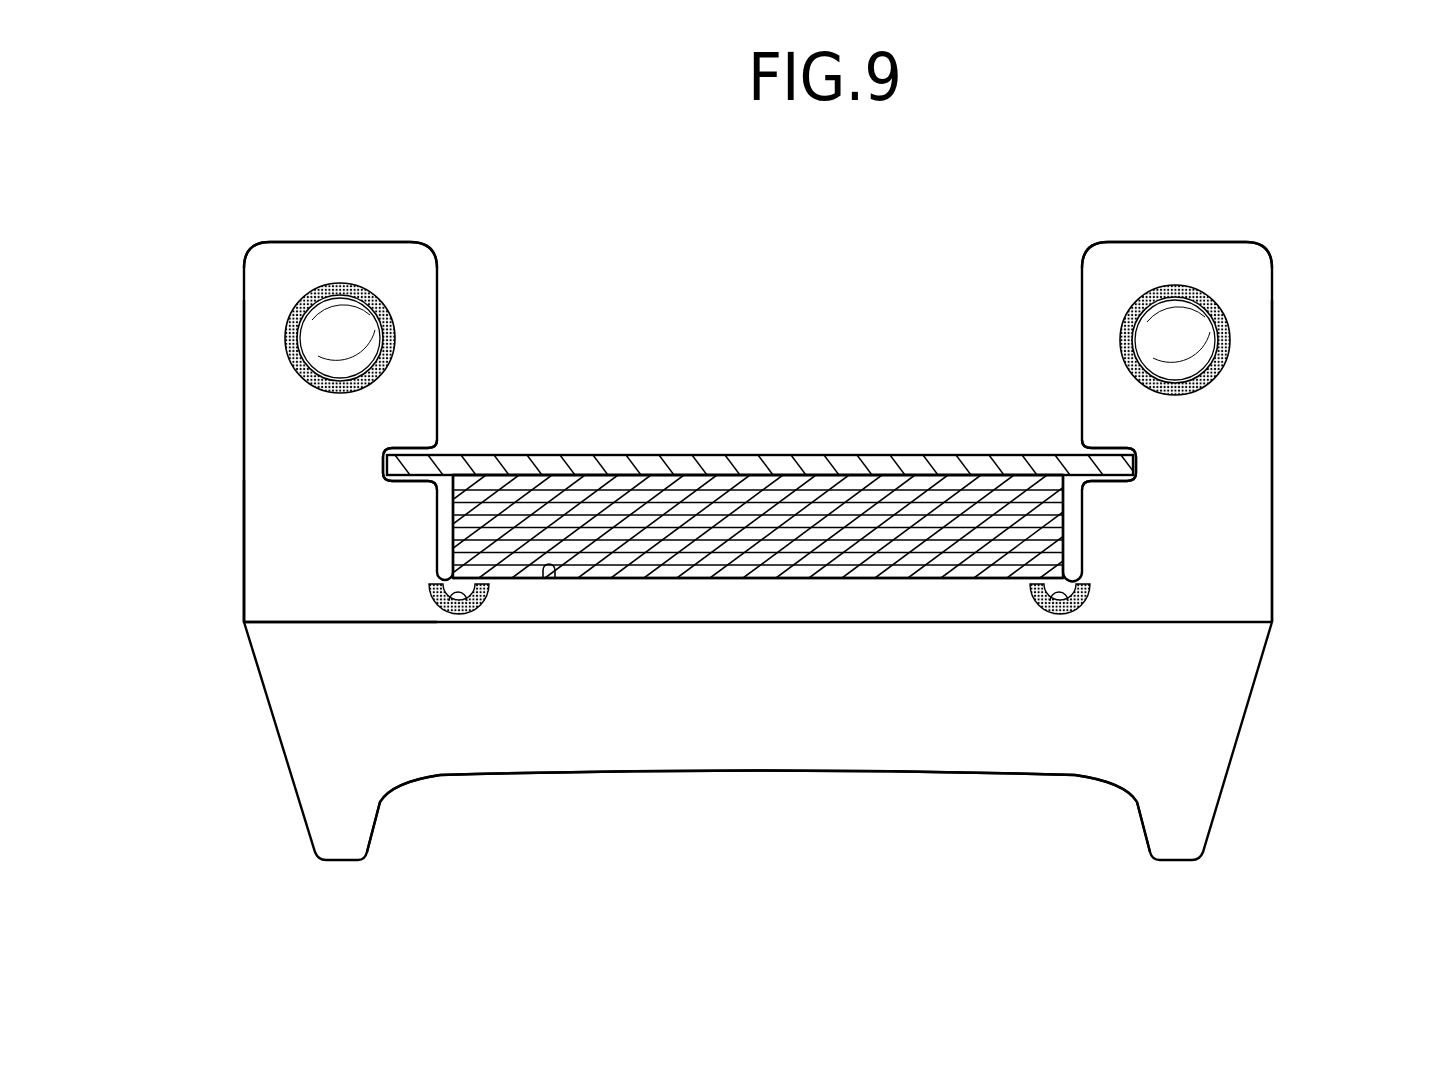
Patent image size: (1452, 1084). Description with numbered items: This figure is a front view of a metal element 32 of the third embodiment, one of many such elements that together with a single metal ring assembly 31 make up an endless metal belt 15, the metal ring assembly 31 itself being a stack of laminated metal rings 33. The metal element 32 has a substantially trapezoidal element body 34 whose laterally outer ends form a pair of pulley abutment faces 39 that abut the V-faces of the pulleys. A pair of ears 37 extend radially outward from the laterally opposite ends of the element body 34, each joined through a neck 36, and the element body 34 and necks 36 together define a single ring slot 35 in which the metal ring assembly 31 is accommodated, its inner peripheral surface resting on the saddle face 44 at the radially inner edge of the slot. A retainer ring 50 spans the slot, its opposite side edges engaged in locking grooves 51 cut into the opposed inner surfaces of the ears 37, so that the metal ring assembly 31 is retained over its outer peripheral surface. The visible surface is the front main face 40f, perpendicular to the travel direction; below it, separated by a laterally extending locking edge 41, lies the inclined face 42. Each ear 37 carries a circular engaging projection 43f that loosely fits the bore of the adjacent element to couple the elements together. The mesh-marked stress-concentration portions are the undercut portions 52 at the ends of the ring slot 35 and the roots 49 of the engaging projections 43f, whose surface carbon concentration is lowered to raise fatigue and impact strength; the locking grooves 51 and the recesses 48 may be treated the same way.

The metal belt 15 is at (720, 298).
The metal ring assembly 31 is at (773, 588).
The metal element 32 is at (1303, 440).
The metal rings 33 is at (613, 580).
The element body 34 is at (1005, 733).
The ring slot 35 is at (1072, 540).
The neck 36 is at (258, 562).
The ear 37 is at (410, 268).
The pulley abutment face 39 is at (273, 707).
The front main face 40f is at (357, 576).
The locking edge 41 is at (952, 625).
The inclined face 42 is at (770, 714).
The engaging projection 43f is at (363, 345).
The saddle face 44 is at (560, 578).
The recess 48 is at (388, 800).
The root of engaging projection 49 is at (298, 310).
The retainer ring 50 is at (780, 463).
The locking groove 51 is at (390, 465).
The undercut portion 52 is at (470, 612).